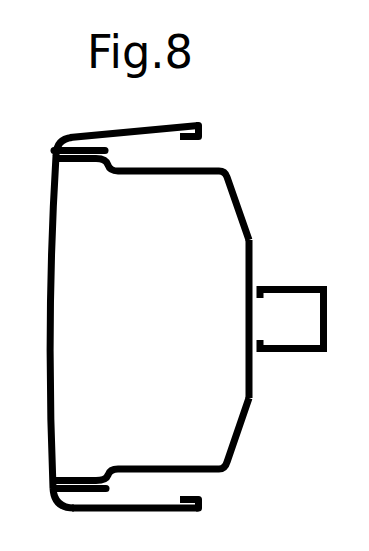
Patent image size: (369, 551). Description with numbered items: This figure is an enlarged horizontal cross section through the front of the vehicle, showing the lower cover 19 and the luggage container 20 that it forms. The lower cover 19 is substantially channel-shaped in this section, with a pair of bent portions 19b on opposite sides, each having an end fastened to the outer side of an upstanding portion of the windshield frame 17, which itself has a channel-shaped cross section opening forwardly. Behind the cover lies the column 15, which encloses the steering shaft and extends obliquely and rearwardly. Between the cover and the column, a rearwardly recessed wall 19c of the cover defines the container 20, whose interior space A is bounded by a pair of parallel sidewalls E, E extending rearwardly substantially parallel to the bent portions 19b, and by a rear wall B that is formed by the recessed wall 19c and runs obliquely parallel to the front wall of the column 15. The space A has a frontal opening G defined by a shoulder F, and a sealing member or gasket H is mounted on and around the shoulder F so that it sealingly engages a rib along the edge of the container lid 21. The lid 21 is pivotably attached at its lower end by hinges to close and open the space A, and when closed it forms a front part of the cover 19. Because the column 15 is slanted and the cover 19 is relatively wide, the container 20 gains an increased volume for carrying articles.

The lower cover 19 is at (127, 316).
The bent portions 19b is at (128, 125).
The rearwardly recessed wall 19c is at (230, 197).
The frame 17 is at (203, 132).
The container 20 is at (141, 320).
The container lid 21 is at (47, 347).
The column 15 is at (278, 352).
The space A is at (134, 333).
The rear wall B is at (245, 308).
The sidewalls E is at (149, 176).
The shoulder F is at (118, 467).
The frontal opening G is at (72, 477).
The sealing member H is at (100, 170).